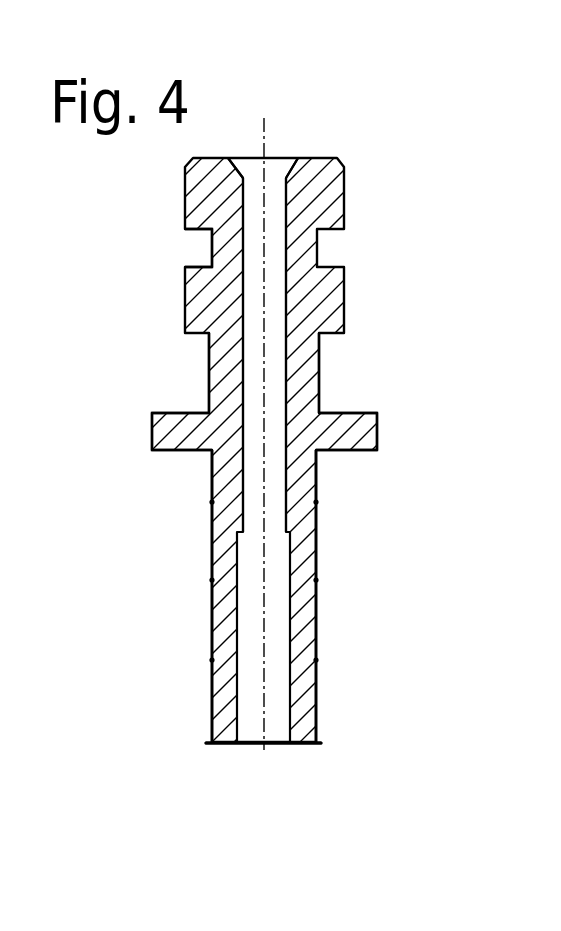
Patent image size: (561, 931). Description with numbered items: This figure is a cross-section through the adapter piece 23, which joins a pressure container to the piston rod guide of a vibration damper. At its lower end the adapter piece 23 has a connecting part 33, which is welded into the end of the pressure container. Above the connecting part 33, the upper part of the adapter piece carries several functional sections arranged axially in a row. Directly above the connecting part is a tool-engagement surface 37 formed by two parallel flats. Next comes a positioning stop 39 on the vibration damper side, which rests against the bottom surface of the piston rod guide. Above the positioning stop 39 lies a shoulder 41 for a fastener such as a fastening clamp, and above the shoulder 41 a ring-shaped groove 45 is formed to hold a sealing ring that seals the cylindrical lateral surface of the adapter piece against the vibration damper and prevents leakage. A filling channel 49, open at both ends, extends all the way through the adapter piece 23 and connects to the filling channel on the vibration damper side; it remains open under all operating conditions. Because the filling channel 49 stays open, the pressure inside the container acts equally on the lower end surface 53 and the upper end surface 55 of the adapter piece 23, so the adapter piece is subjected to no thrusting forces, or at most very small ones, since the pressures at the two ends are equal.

The adapter piece 23 is at (449, 185).
The upper end surface 55 is at (312, 152).
The ring-shaped groove 45 is at (182, 249).
The filling channel 49 is at (253, 317).
The shoulder 41 is at (199, 373).
The positioning stop 39 is at (365, 421).
The tool-engagement surface 37 is at (203, 471).
The connecting part 33 is at (316, 630).
The lower end surface 53 is at (301, 752).